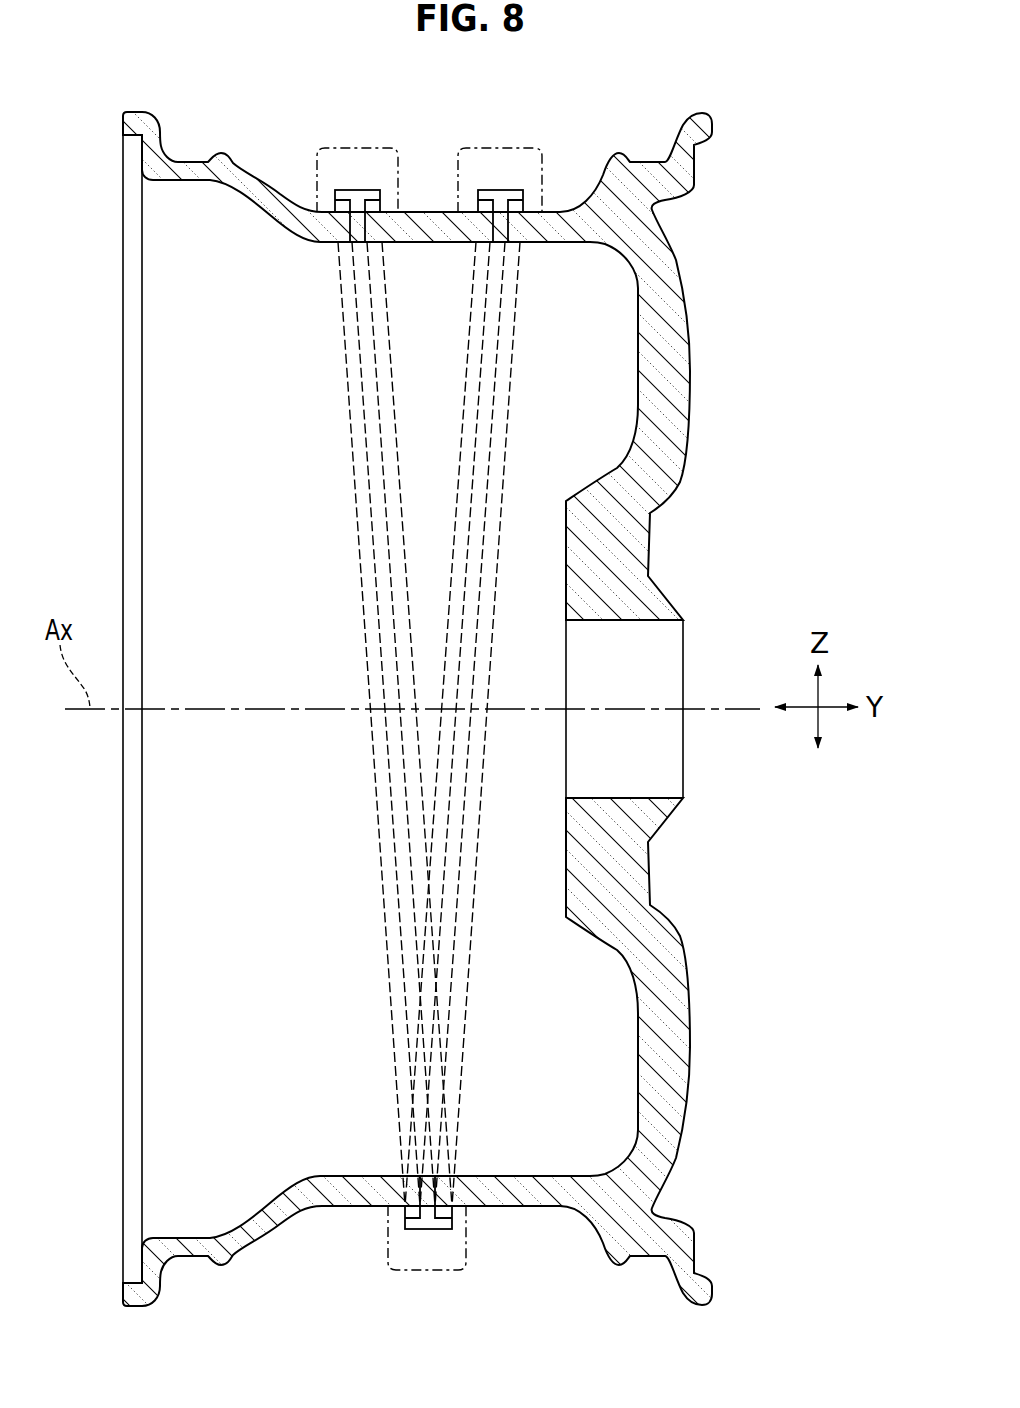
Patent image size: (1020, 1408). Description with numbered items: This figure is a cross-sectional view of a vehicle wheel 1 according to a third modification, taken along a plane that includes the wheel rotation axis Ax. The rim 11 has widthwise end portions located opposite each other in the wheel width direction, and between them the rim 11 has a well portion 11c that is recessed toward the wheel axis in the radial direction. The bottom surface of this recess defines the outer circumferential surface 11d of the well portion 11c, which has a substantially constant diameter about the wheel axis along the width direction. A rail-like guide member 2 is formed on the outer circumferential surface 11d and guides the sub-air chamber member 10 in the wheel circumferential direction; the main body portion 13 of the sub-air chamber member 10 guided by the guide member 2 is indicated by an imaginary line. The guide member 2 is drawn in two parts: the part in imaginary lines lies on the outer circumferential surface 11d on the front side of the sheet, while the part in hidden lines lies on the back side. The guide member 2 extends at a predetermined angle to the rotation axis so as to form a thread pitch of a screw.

The vehicle wheel 1 is at (667, 91).
The guide member 2 is at (355, 200).
The sub-air chamber member 10 is at (456, 714).
The main body portion 13 is at (337, 148).
The rim 11 is at (148, 112).
The well portion 11c is at (441, 151).
The outer circumferential surface 11d is at (433, 212).